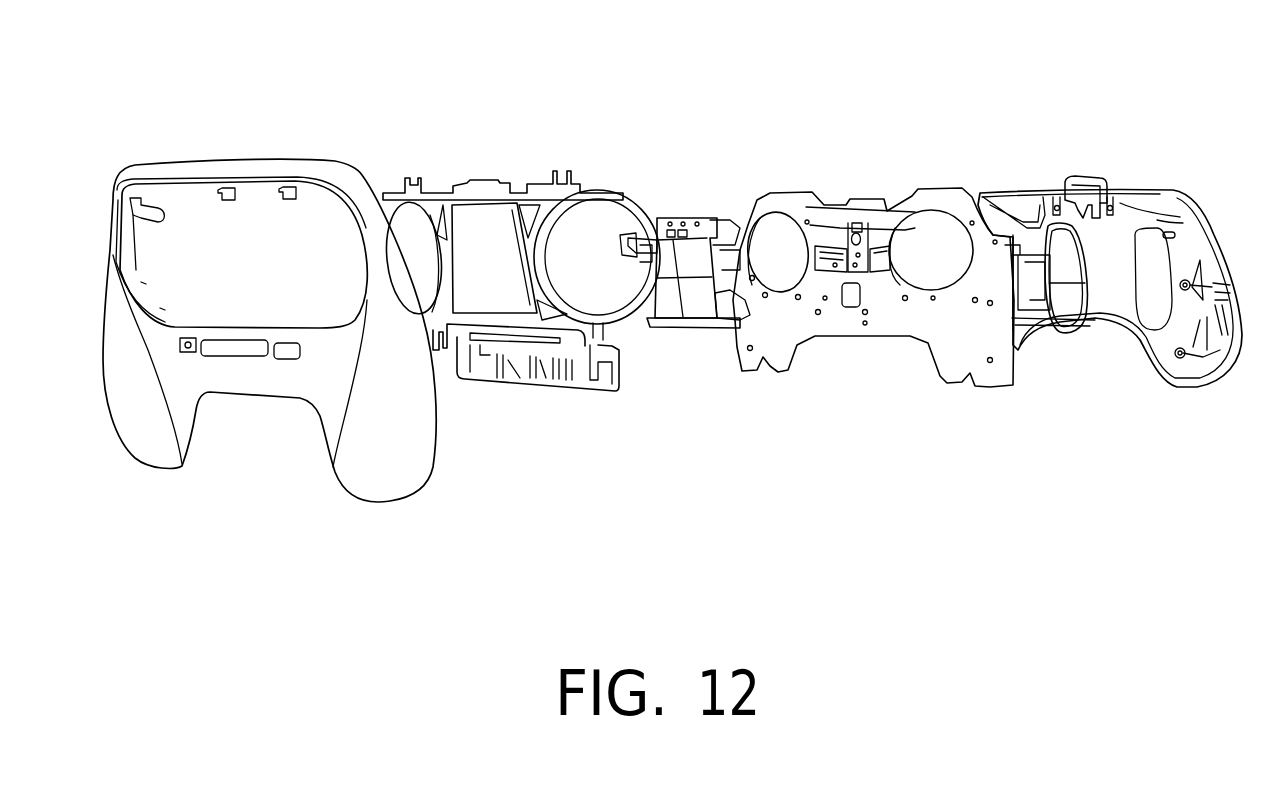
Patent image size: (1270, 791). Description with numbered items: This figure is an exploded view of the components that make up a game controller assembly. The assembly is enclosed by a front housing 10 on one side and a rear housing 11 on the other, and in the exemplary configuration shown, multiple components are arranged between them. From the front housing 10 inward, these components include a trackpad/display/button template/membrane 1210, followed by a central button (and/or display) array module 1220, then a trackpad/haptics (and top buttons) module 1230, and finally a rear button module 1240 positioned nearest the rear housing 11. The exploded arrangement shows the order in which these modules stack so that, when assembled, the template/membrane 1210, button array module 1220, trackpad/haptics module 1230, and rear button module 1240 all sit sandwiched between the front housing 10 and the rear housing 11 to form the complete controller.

The front housing 10 is at (240, 166).
The trackpad/display/button template/membrane 1210 is at (480, 197).
The central button array module 1220 is at (695, 250).
The trackpad/haptics module 1230 is at (867, 230).
The rear button module 1240 is at (1067, 199).
The rear housing 11 is at (1122, 225).